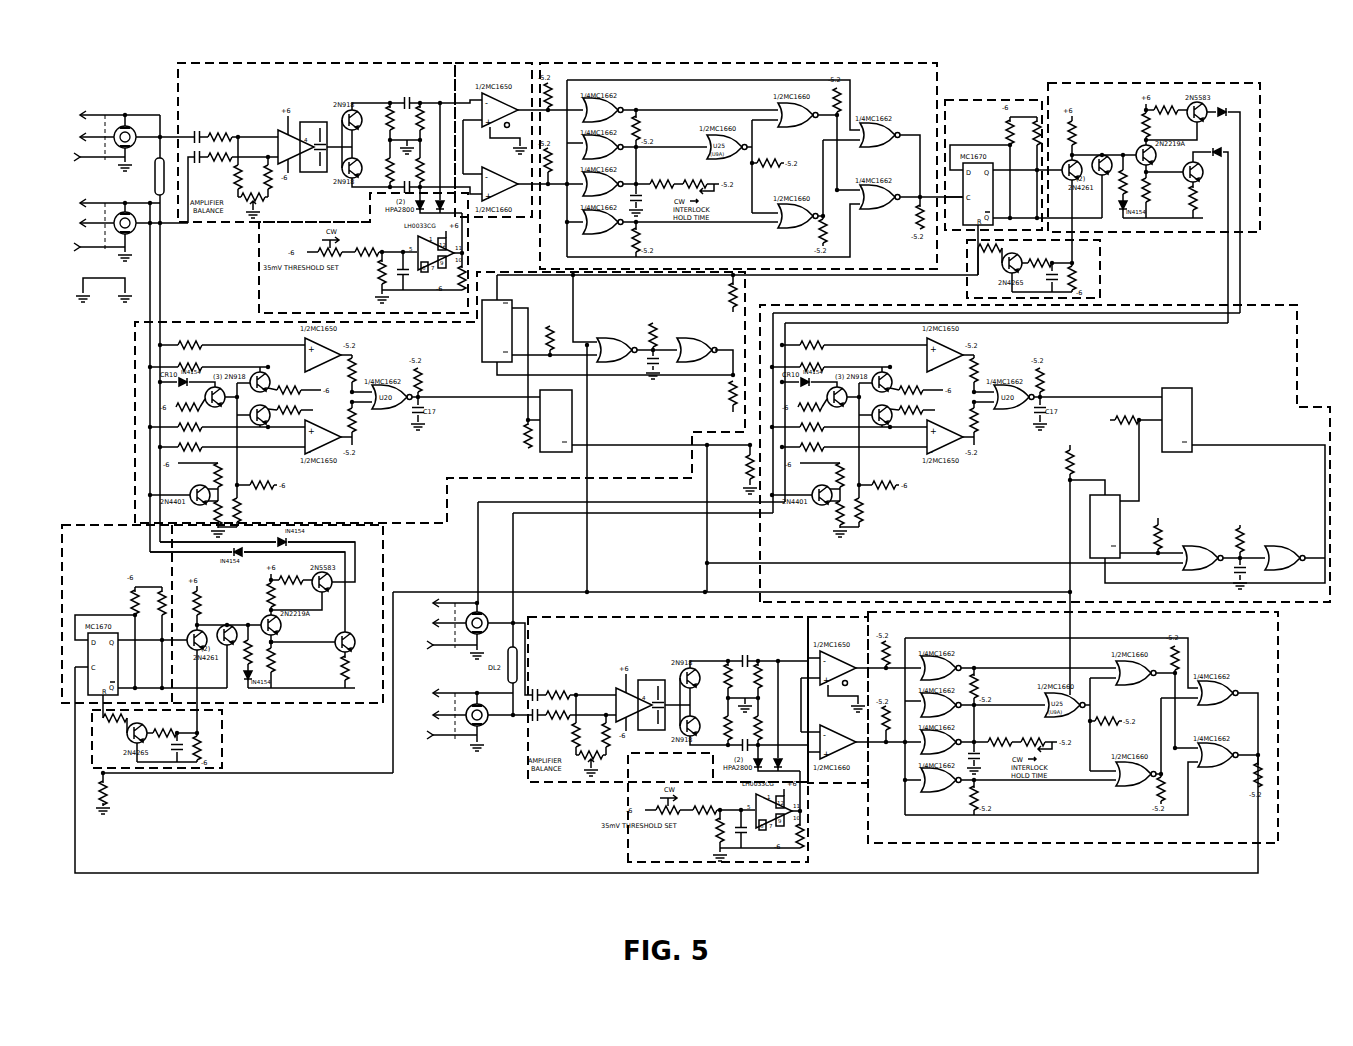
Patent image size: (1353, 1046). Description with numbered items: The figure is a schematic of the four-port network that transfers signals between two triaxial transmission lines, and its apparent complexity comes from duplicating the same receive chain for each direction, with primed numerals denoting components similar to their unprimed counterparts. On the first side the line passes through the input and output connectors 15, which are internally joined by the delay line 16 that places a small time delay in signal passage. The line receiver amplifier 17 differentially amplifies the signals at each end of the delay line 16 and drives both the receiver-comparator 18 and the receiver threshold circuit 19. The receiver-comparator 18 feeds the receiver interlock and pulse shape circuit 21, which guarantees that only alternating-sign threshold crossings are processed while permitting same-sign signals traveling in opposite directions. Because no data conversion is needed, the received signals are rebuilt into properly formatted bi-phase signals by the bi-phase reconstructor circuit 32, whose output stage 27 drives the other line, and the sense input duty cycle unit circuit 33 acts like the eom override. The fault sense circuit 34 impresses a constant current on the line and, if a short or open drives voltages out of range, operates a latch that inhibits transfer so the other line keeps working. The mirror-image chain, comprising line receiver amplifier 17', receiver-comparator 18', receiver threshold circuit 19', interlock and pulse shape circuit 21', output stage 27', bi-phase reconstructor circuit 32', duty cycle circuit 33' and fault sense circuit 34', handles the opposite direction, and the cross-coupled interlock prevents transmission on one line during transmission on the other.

The input and output connectors 15 is at (135, 143).
The delay line 16 is at (152, 172).
The line receiver amplifier 17 is at (320, 132).
The receiver-comparator 18 is at (493, 130).
The receiver threshold circuit 19 is at (381, 253).
The receiver interlock and pulse shape circuit 21 is at (727, 156).
The output driver circuit 27 is at (1154, 193).
The bi-phase reconstructor circuit 32 is at (1023, 172).
The sense input duty cycle unit circuit 33 is at (1047, 269).
The fault sense circuit 34 is at (659, 420).
The line receiver amplifier 17' is at (668, 689).
The receiver-comparator 18' is at (830, 714).
The receiver threshold circuit 19' is at (720, 807).
The receiver interlock and pulse shape circuit 21' is at (1083, 727).
The output driver circuit (second channel) 27' is at (284, 636).
The bi-phase reconstructor circuit 32' is at (222, 629).
The sense input duty cycle unit circuit 33' is at (172, 739).
The fault sense circuit 34' is at (1045, 453).